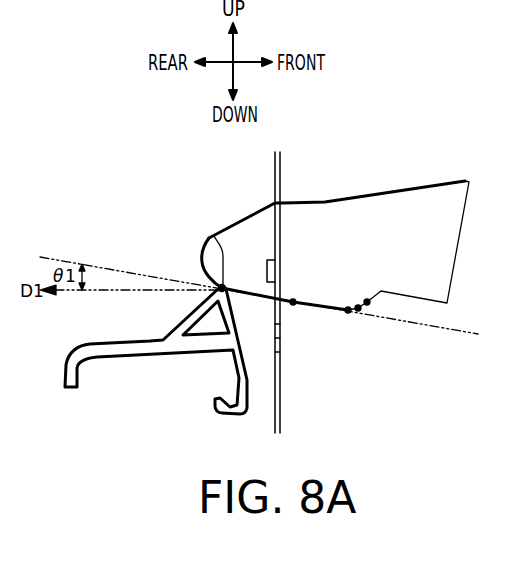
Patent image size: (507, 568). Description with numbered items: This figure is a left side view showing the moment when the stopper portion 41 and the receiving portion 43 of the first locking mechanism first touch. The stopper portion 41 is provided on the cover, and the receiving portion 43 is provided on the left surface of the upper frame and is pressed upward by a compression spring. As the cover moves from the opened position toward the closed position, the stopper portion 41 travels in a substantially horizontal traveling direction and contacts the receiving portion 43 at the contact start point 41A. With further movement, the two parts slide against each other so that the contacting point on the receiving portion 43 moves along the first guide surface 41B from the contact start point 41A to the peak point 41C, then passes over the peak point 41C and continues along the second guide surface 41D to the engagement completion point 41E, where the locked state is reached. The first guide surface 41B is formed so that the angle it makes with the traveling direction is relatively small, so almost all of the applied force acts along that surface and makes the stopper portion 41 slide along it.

The stopper portion 41 is at (468, 181).
The contact start point 41A is at (209, 238).
The first guide surface 41B is at (293, 303).
The peak point 41C is at (348, 310).
The second guide surface 41D is at (358, 310).
The engagement completion point 41E is at (367, 302).
The receiving portion 43 is at (65, 387).